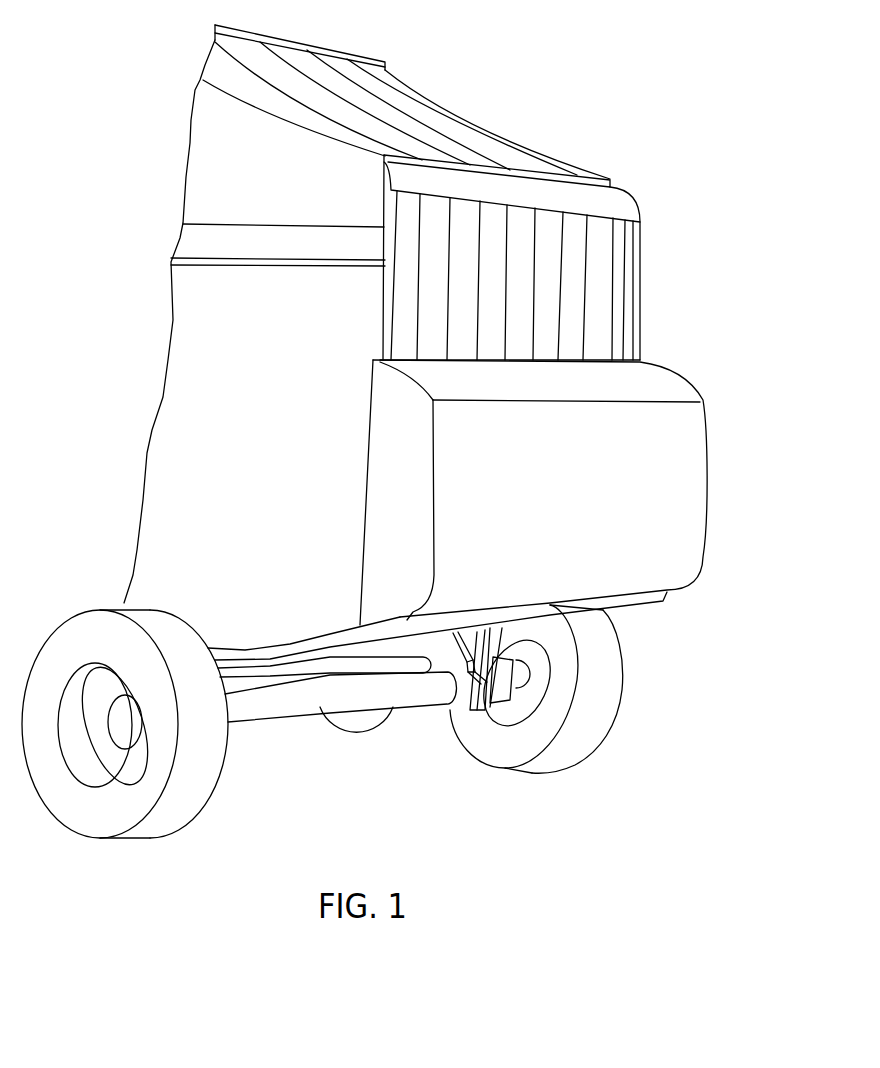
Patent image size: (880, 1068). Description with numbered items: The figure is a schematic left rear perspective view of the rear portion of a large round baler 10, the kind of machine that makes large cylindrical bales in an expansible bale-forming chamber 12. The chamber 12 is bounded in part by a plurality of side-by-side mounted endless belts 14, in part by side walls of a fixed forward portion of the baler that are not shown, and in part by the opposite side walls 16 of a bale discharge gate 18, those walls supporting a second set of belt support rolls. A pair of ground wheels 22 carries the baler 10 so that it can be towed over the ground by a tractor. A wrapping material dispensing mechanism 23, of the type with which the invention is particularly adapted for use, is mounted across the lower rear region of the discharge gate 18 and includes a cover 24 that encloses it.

The large round baler 10 is at (604, 107).
The expansible bale-forming chamber 12 is at (433, 712).
The endless belts 14 is at (367, 102).
The side walls 16 is at (270, 458).
The bale discharge gate 18 is at (646, 308).
The ground wheels 22 is at (610, 703).
The wrapping material dispensing mechanism 23 is at (710, 430).
The cover 24 is at (557, 504).